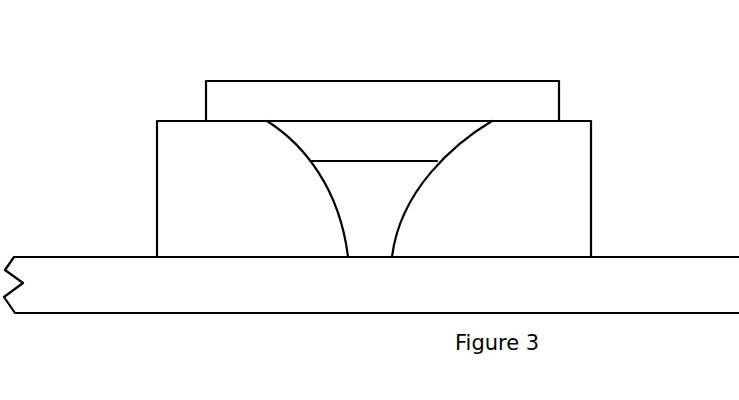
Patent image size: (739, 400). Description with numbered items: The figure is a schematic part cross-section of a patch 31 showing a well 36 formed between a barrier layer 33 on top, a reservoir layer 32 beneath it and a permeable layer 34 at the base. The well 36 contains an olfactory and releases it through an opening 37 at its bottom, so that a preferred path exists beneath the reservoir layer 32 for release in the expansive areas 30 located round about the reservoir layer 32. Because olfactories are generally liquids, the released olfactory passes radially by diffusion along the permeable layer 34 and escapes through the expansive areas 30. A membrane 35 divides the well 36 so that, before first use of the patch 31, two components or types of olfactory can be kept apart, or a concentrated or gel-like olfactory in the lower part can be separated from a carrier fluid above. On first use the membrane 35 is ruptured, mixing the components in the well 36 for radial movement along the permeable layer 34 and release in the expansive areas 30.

The expansive areas 30 is at (94, 280).
The patch 31 is at (553, 40).
The reservoir layer 32 is at (542, 185).
The barrier layer 33 is at (366, 103).
The permeable layer 34 is at (647, 272).
The membrane 35 is at (398, 161).
The well 36 is at (327, 137).
The opening 37 is at (368, 257).